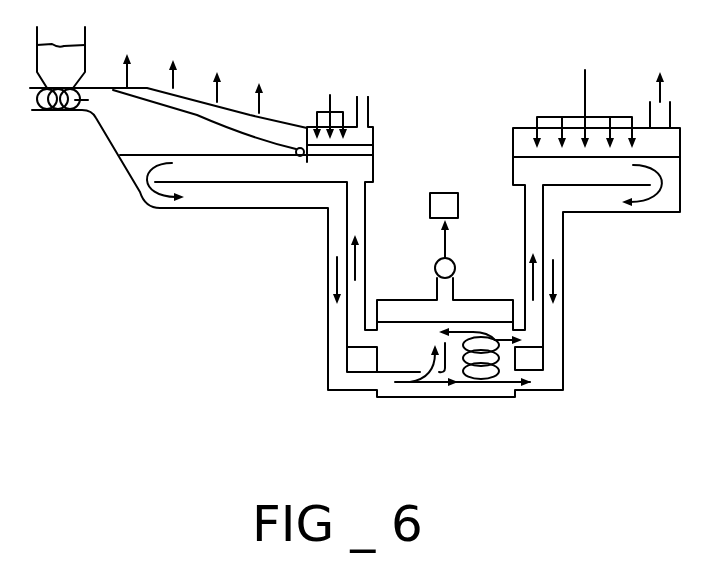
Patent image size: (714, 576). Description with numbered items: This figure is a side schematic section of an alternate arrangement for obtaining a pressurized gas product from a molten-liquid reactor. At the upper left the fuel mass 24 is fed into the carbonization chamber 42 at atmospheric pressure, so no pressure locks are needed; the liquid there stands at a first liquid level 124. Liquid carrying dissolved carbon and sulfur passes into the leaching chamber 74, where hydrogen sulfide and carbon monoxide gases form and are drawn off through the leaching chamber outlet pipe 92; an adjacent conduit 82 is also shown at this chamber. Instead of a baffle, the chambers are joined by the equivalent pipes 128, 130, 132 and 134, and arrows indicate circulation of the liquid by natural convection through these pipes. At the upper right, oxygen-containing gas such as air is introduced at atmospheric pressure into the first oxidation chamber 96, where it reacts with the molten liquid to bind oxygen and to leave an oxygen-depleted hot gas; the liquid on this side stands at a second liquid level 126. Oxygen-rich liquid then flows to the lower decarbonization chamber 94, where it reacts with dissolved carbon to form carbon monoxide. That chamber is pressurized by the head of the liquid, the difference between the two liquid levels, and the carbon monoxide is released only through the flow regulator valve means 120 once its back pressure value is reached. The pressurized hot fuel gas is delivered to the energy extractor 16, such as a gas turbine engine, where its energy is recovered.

The energy extractor 16 is at (444, 225).
The fuel mass 24 is at (168, 139).
The carbonization chamber 42 is at (270, 127).
The leaching chamber 74 is at (373, 135).
The conduit 82 is at (373, 148).
The leaching chamber outlet pipe 92 is at (369, 105).
The decarbonization chamber 94 is at (485, 312).
The first oxidation chamber 96 is at (676, 153).
The flow regulator valve means 120 is at (455, 262).
The first liquid level 124 is at (117, 149).
The second liquid level 126 is at (385, 316).
The pipe 128 is at (327, 258).
The pipe 130 is at (367, 258).
The pipe 132 is at (523, 215).
The pipe 134 is at (565, 266).